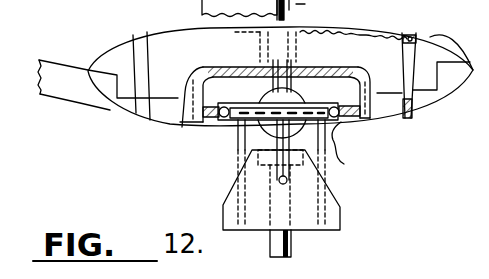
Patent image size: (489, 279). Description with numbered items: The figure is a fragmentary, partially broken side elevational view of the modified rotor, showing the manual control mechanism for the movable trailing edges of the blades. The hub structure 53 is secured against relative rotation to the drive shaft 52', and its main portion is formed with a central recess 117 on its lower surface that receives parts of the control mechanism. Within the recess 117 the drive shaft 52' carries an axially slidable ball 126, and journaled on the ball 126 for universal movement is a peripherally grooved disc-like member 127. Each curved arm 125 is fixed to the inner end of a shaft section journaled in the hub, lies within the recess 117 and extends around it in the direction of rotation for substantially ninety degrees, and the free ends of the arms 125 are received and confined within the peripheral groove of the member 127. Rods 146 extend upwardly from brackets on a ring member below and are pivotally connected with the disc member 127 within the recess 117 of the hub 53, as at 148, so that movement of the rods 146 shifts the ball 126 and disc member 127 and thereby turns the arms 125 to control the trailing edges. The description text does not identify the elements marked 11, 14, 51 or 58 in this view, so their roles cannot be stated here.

The wing 11 is at (35, 35).
The section line 14 is at (385, 5).
The base block 51 is at (221, 202).
The drive shaft 52' is at (303, 243).
The hub structure 53 is at (156, 30).
The skin 58 is at (441, 43).
The central recess 117 is at (184, 126).
The curved arm 125 is at (233, 122).
The axially slidable ball 126 is at (292, 99).
The peripherally grooved disc-like member 127 is at (238, 142).
The rod 146 is at (238, 166).
The pivotal connection 148 is at (352, 147).